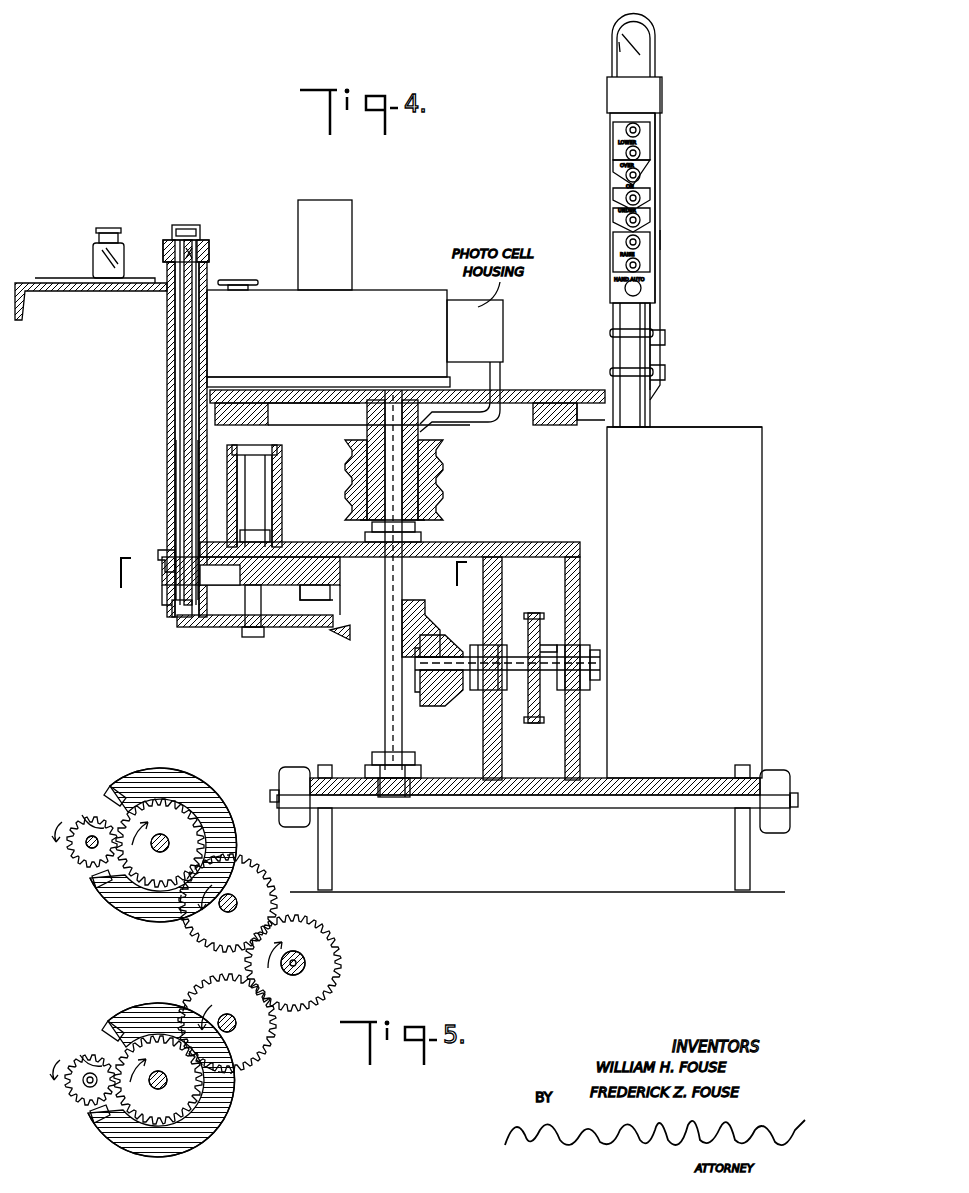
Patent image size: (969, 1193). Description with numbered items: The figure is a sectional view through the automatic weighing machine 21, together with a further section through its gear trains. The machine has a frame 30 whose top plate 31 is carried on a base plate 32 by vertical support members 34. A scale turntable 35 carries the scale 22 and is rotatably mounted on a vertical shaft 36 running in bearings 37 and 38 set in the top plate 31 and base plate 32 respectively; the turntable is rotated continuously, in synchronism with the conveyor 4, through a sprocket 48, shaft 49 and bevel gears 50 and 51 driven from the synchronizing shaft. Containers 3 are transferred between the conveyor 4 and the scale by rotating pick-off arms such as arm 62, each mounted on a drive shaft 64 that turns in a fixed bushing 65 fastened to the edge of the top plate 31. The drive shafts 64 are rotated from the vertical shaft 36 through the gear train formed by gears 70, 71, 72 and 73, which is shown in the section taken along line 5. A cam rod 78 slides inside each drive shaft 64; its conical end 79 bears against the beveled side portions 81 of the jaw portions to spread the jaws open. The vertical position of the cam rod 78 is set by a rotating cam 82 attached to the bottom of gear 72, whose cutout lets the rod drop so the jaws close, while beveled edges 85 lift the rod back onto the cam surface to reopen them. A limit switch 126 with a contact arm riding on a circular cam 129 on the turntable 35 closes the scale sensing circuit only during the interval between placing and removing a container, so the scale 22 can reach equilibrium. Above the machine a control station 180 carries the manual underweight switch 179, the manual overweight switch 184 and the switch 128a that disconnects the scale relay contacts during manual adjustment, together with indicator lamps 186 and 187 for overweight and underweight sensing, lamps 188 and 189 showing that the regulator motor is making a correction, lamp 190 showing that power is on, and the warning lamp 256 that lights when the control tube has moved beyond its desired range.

In FIG. 4, the container 3 is at (117, 242).
In FIG. 4, the conveyor 4 is at (62, 278).
In FIG. 4, the section line 5— 5 is at (293, 583).
In FIG. 4, the automatic weighing machine 21 is at (720, 395).
In FIG. 4, the scale 22 is at (365, 305).
In FIG. 4, the frame 30 is at (557, 516).
In FIG. 4, the top plate 31 is at (468, 543).
In FIG. 4, the base plate 32 is at (637, 778).
In FIG. 4, the vertical support members 34 is at (565, 588).
In FIG. 4, the scale turntable 35 is at (518, 390).
In FIG. 4, the vertical shaft 36 is at (385, 679).
In FIG. 5, the vertical shaft 36 is at (305, 958).
In FIG. 4, the bearing 37 is at (432, 535).
In FIG. 4, the bearing 38 is at (425, 777).
In FIG. 4, the sprocket 48 is at (528, 715).
In FIG. 4, the shaft 49 is at (542, 700).
In FIG. 4, the bevel gear 50 is at (440, 695).
In FIG. 4, the bevel gear 51 is at (355, 636).
In FIG. 4, the rotating arm 62 is at (202, 245).
In FIG. 4, the drive shaft 64 is at (188, 337).
In FIG. 4, the fixed bushing 65 is at (205, 356).
In FIG. 4, the gear 70 is at (424, 592).
In FIG. 5, the gear 70 is at (335, 963).
In FIG. 4, the gear 71 is at (305, 588).
In FIG. 4, the gear 72 is at (222, 586).
In FIG. 4, the gear 73 is at (168, 588).
In FIG. 4, the cam rod 78 is at (185, 447).
In FIG. 4, the conical end 79 is at (200, 252).
In FIG. 4, the beveled side portion 81 is at (254, 496).
In FIG. 4, the rotating cam 82 is at (232, 605).
In FIG. 4, the beveled edge 85 is at (180, 620).
In FIG. 4, the limit switch 126 is at (600, 437).
In FIG. 4, the circular cam 129 is at (600, 408).
In FIG. 4, the underweight switch 179 is at (641, 267).
In FIG. 4, the control station 180 is at (661, 240).
In FIG. 4, the manual overweight switch 184 is at (640, 130).
In FIG. 4, the indicator lamp 186 is at (641, 220).
In FIG. 4, the indicator lamp 187 is at (641, 175).
In FIG. 4, the lamp 188 is at (641, 246).
In FIG. 4, the lamp 189 is at (641, 153).
In FIG. 4, the lamp 190 is at (641, 198).
In FIG. 4, the switch 128a is at (641, 291).
In FIG. 4, the warning lamp 256 is at (645, 42).